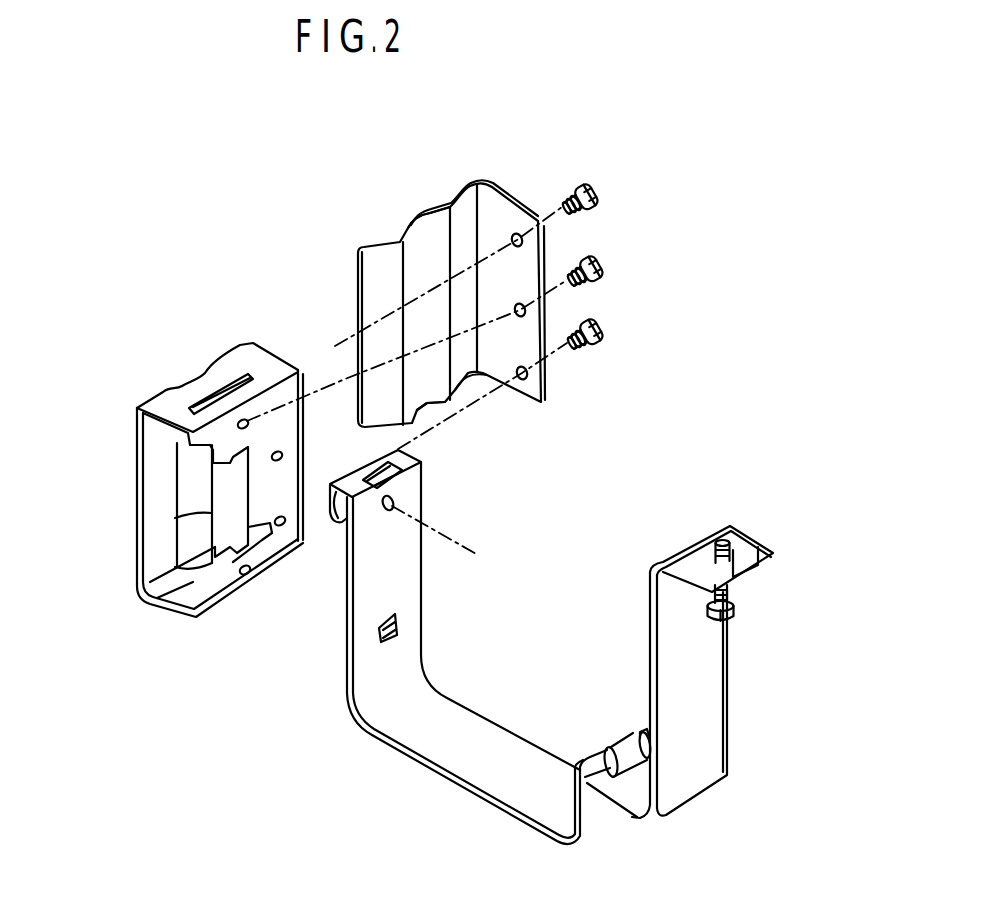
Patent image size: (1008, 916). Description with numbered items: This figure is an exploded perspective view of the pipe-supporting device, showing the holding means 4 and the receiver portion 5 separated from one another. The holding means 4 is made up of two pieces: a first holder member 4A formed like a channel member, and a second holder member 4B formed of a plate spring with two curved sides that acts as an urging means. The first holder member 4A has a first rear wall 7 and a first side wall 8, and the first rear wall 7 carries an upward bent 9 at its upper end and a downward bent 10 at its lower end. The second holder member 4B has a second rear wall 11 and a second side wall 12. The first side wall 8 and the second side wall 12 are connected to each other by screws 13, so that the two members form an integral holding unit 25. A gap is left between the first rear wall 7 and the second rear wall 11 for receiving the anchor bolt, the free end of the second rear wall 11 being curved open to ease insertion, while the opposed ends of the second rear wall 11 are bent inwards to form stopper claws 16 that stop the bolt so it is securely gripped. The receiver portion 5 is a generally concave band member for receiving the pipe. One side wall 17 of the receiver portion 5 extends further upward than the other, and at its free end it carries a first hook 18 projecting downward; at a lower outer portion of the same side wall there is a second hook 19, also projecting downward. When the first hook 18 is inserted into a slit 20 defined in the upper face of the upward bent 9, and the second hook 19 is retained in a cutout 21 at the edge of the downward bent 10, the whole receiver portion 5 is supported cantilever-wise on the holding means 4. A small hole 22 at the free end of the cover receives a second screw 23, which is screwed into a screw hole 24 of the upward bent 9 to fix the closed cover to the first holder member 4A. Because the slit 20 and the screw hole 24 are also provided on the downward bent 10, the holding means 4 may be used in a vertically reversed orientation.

The holding means 4 is at (243, 237).
The first holder member 4A is at (235, 344).
The second holder member 4B is at (350, 290).
The receiver portion 5 is at (388, 758).
The first rear wall 7 is at (135, 438).
The first side wall 8 is at (326, 407).
The upward bent 9 is at (210, 458).
The downward bent 10 is at (228, 577).
The second rear wall 11 is at (467, 373).
The second side wall 12 is at (537, 222).
The screws 13 is at (596, 208).
The stopper claws 16 is at (428, 215).
The side wall 17 is at (422, 583).
The first hook 18 is at (338, 523).
The second hook 19 is at (395, 637).
The slit 20 is at (260, 351).
The cutout 21 is at (252, 548).
The small hole 22 is at (710, 566).
The second screw 23 is at (732, 620).
The screw hole 24 is at (248, 426).
The integral holding unit 25 is at (586, 162).